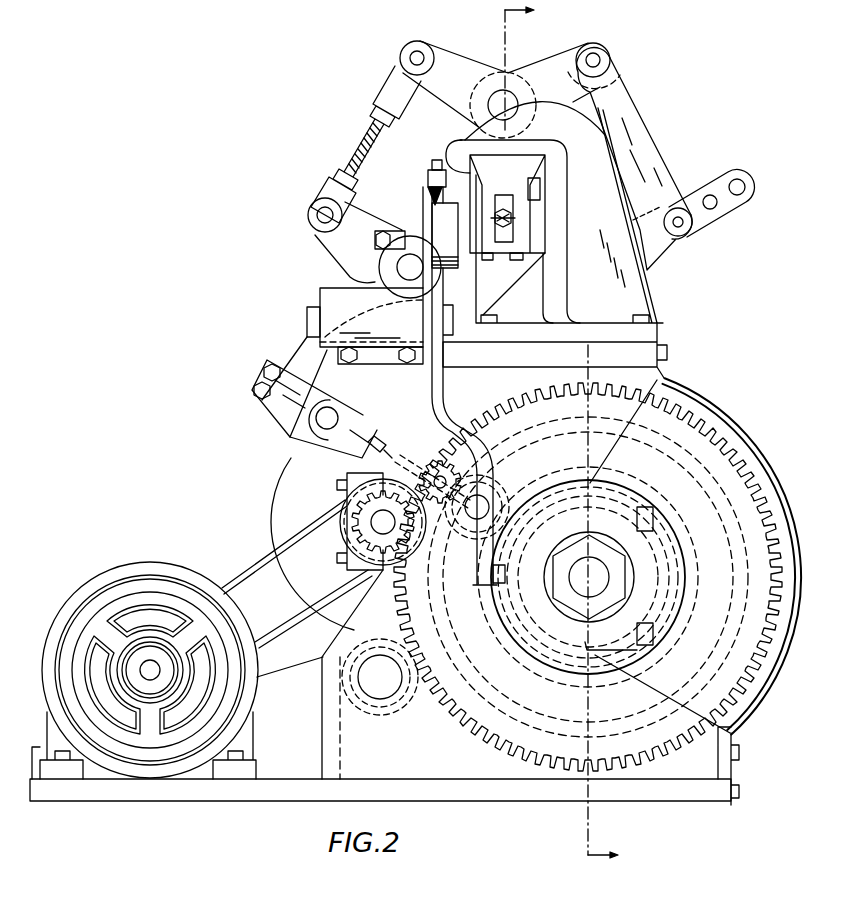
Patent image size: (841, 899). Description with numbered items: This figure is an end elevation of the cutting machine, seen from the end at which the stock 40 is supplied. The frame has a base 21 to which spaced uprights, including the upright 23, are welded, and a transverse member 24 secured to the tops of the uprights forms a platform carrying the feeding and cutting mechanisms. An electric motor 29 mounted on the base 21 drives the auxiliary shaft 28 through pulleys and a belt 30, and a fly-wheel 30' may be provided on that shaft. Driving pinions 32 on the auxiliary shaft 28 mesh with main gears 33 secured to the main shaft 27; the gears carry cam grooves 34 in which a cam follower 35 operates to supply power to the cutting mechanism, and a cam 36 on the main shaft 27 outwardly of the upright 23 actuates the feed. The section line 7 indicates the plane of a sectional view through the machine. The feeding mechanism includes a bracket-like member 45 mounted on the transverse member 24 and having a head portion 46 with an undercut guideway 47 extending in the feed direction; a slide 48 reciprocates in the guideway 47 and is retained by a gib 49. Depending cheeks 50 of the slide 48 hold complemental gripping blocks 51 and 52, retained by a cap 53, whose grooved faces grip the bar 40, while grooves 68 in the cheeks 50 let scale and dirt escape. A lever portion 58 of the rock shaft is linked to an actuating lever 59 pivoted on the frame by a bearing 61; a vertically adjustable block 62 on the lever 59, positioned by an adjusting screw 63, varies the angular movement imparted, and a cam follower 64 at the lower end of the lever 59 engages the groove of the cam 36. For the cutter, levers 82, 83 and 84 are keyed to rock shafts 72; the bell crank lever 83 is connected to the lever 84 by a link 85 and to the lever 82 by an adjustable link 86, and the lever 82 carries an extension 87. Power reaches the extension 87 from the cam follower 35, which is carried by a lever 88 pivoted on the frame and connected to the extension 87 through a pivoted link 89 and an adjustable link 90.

The section line 7- 7 is at (568, 434).
The base 21 is at (525, 797).
The upright 23 is at (348, 747).
The transverse member 24 is at (643, 352).
The main shaft 27 is at (603, 577).
The auxiliary shaft 28 is at (377, 522).
The electric motor 29 is at (192, 588).
The belt 30 is at (364, 522).
The fly-wheel 30' is at (286, 544).
The driving pinions 32 is at (350, 508).
The main gears 33 is at (745, 452).
The cam grooves 34 is at (702, 428).
The cam follower 35 is at (545, 490).
The cam 36 is at (652, 650).
The stock 40 is at (506, 212).
The bracket-like member 45 is at (640, 305).
The head portion 46 is at (600, 122).
The undercut guideway 47 is at (458, 160).
The slide 48 is at (547, 140).
The gib 49 is at (542, 167).
The cheeks 50 is at (530, 233).
The upper gripping block 51 is at (503, 205).
The lower gripping block 52 is at (508, 237).
The cap 53 is at (510, 252).
The lever portion 58 is at (468, 232).
The actuating lever 59 is at (444, 392).
The bearing 61 is at (343, 298).
The vertically adjustable block 62 is at (431, 213).
The adjusting screw 63 is at (427, 174).
The cam follower 64 is at (470, 605).
The grooves 68 is at (513, 217).
The rock shafts 72 is at (502, 88).
The lever 82 is at (360, 216).
The bell crank lever 83 is at (538, 66).
The lever 84 is at (667, 248).
The link 85 is at (652, 140).
The link 86 is at (370, 123).
The extension 87 is at (290, 430).
The lever 88 is at (335, 620).
The pivoted link 89 is at (462, 470).
The link 90 is at (340, 448).